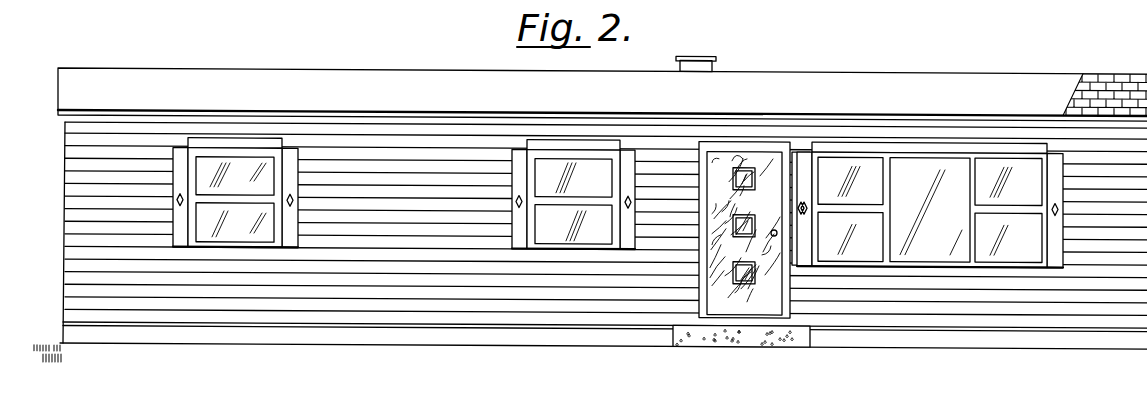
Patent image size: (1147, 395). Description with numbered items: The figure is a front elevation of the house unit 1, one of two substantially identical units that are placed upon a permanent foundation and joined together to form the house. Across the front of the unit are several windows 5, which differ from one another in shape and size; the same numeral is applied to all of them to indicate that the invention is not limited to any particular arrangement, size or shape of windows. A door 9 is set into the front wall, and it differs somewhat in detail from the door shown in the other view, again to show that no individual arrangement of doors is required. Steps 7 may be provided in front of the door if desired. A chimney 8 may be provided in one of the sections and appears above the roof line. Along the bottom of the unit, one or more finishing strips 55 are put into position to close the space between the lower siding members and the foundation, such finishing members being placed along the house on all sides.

The house unit 1 is at (781, 66).
The windows 5 is at (930, 173).
The steps 7 is at (760, 341).
The chimney 8 is at (695, 61).
The door 9 is at (728, 302).
The finishing strips 55 is at (325, 338).